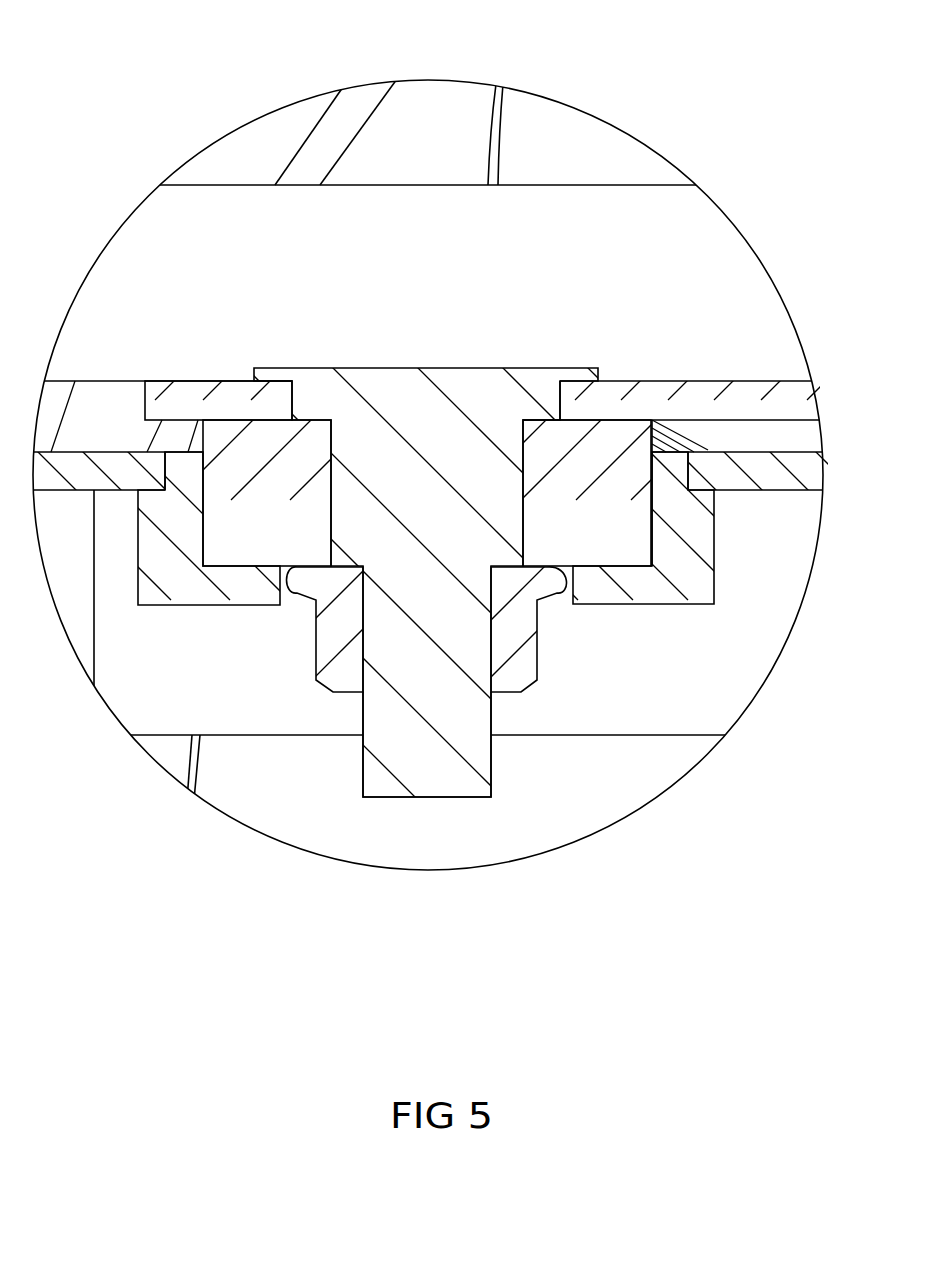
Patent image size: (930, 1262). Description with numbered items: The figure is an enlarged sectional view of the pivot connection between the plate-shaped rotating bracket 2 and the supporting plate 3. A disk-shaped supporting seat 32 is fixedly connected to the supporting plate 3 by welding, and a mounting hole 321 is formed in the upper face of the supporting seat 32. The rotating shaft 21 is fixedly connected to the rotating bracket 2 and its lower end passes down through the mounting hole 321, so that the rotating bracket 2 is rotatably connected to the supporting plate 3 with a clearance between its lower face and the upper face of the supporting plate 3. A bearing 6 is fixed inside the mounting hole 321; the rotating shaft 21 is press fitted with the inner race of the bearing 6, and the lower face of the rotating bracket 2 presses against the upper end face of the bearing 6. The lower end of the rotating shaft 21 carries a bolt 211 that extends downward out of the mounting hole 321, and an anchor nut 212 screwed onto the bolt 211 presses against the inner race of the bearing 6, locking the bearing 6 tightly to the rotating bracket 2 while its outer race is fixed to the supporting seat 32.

The rotating bracket 2 is at (682, 400).
The supporting plate 3 is at (760, 470).
The bearing 6 is at (277, 485).
The rotating shaft 21 is at (410, 470).
The supporting seat 32 is at (178, 547).
The bolt 211 is at (420, 713).
The anchor nut 212 is at (508, 628).
The mounting hole 321 is at (658, 536).